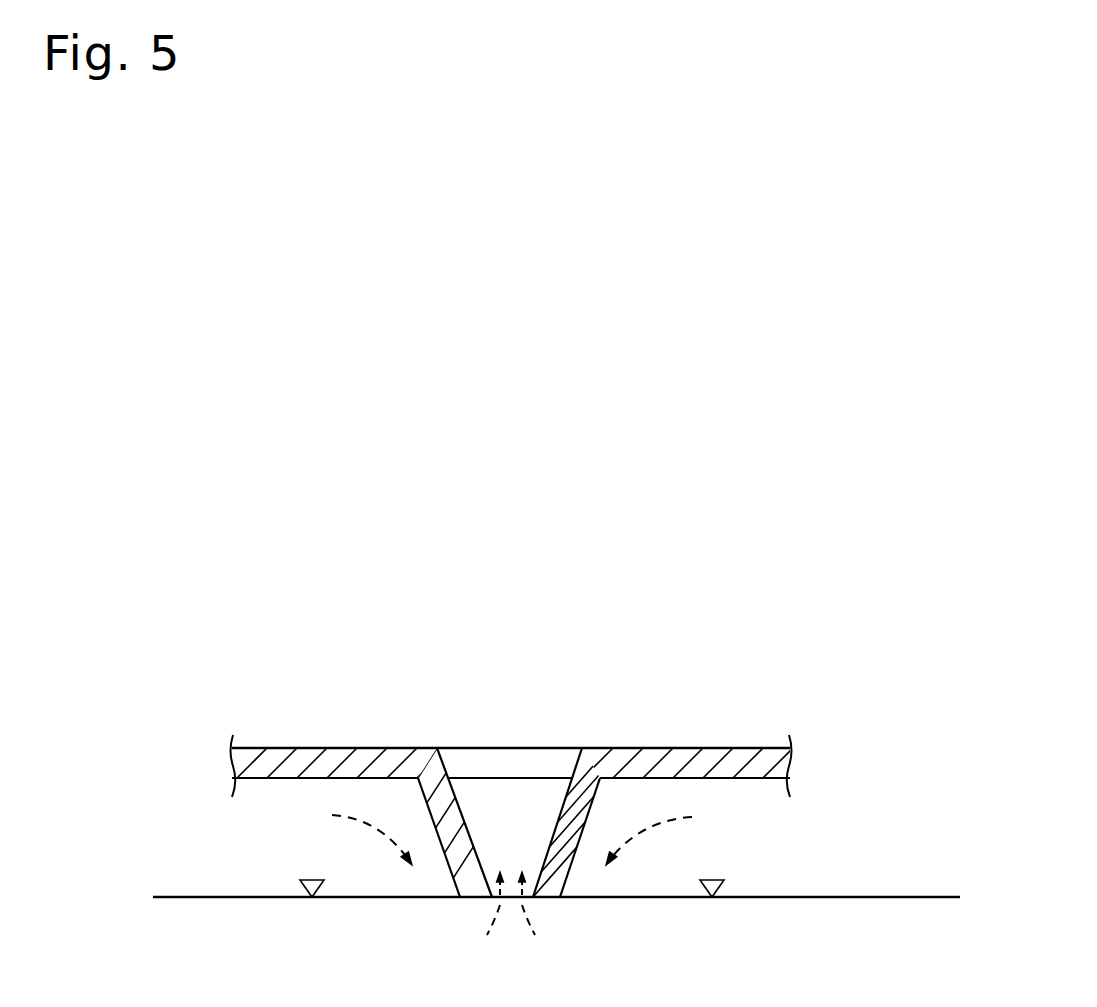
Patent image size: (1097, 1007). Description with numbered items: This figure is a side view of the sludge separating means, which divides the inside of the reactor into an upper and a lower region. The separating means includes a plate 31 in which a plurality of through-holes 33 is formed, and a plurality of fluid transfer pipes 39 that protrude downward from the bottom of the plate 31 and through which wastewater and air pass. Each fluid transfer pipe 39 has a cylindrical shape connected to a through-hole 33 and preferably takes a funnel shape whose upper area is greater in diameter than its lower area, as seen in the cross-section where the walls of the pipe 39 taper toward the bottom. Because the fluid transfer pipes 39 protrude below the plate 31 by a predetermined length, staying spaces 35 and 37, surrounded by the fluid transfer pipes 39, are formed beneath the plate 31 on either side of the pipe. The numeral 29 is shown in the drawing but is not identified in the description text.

The buoyancy body 29 is at (545, 742).
The plate 31 is at (688, 718).
The through-holes 33 is at (511, 688).
The staying space 35 is at (342, 746).
The staying space 37 is at (709, 745).
The fluid transfer pipes 39 is at (580, 939).